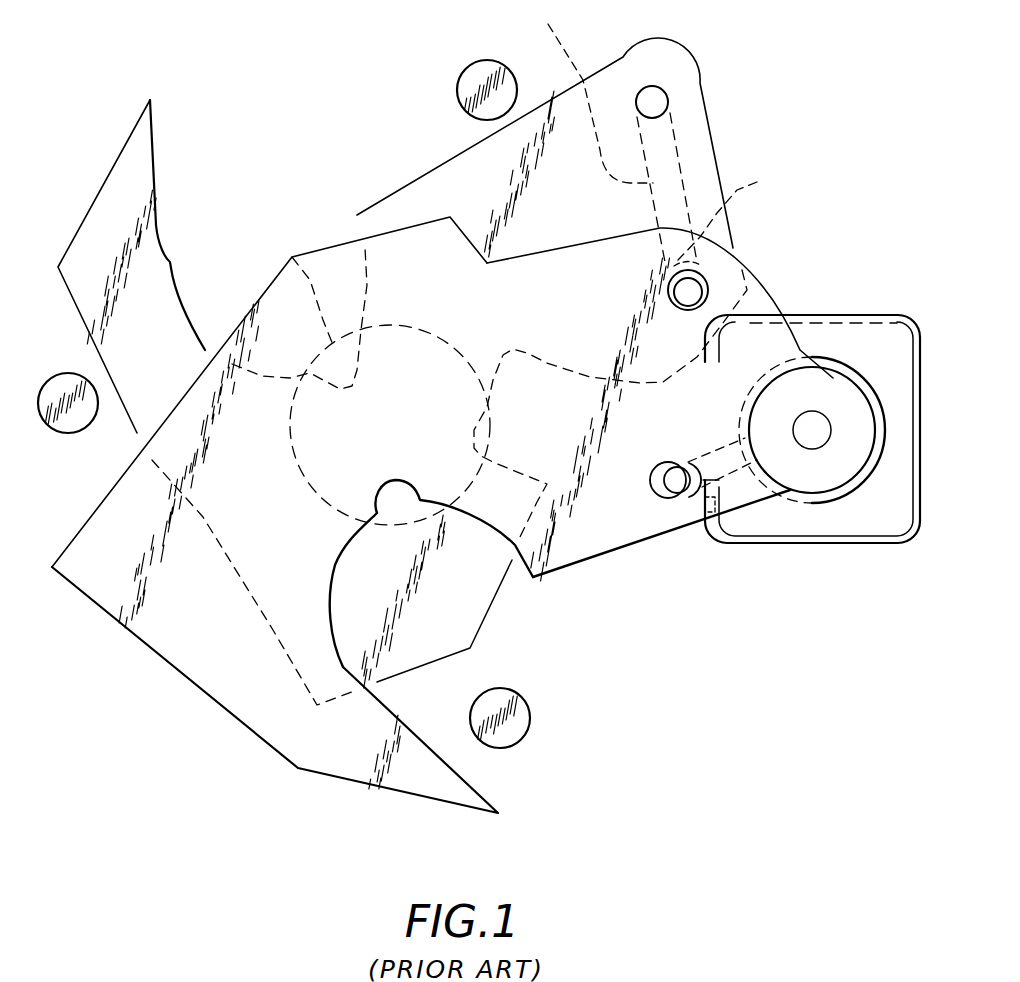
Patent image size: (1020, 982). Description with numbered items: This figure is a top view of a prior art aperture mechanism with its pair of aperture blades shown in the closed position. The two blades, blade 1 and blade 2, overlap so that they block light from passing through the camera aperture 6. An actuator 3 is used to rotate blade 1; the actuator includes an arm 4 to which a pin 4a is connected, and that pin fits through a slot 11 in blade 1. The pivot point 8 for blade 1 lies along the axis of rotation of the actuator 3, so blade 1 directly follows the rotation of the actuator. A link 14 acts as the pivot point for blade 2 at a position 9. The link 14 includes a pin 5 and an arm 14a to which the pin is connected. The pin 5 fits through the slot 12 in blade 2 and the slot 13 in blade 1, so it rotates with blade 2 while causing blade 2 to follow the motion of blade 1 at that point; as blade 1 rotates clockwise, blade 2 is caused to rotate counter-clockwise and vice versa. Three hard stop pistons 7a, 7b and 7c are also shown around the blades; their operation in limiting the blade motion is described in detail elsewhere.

The aperture blade 1 is at (193, 640).
The aperture blade 2 is at (138, 177).
The actuator 3 is at (813, 543).
The arm 4 is at (716, 483).
The pin 4a is at (673, 495).
The pin 5 is at (703, 283).
The camera aperture 6 is at (288, 255).
The hard stop piston 7a is at (527, 733).
The hard stop piston 7b is at (90, 413).
The hard stop piston 7c is at (467, 62).
The pivot point 8 is at (812, 430).
The position 9 is at (652, 100).
The slot 11 is at (663, 496).
The slot 12 is at (713, 297).
The slot 13 is at (730, 217).
The link 14 is at (700, 140).
The arm 14a is at (575, 95).